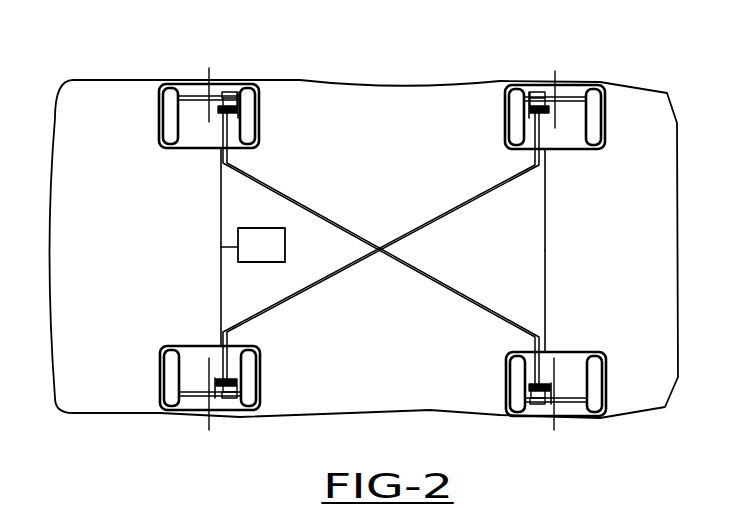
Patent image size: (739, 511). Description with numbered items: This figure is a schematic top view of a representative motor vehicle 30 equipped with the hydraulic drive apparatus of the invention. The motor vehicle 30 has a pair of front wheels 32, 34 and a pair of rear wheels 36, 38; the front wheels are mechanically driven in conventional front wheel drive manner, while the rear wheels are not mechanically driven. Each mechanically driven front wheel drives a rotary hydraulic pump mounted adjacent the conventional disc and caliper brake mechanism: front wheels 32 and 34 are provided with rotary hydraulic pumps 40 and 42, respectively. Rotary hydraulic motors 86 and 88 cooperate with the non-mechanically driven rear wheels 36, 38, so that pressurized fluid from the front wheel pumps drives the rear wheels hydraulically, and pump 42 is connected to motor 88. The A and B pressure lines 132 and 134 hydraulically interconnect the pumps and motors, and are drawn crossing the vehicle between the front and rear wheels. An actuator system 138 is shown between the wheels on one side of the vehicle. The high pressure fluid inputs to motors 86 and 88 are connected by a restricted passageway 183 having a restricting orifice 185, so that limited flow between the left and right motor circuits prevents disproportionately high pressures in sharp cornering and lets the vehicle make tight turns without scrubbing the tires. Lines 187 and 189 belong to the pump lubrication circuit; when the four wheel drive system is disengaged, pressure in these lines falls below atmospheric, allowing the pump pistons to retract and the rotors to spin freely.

The motor vehicle 30 is at (388, 62).
The front wheel 32 is at (160, 392).
The front wheel 34 is at (158, 100).
The rear wheel 36 is at (506, 398).
The rear wheel 38 is at (584, 84).
The rotary hydraulic pump 40 is at (233, 427).
The rotary hydraulic pump 42 is at (228, 70).
The rotary hydraulic motor 86 is at (538, 426).
The rotary hydraulic motor 88 is at (576, 2).
The A pressure line 132 is at (403, 258).
The B pressure line 134 is at (417, 272).
The actuator system 138 is at (287, 241).
The restricted passageway 183 is at (547, 298).
The restricting orifice 185 is at (548, 195).
The line 187 is at (221, 188).
The line 189 is at (221, 293).